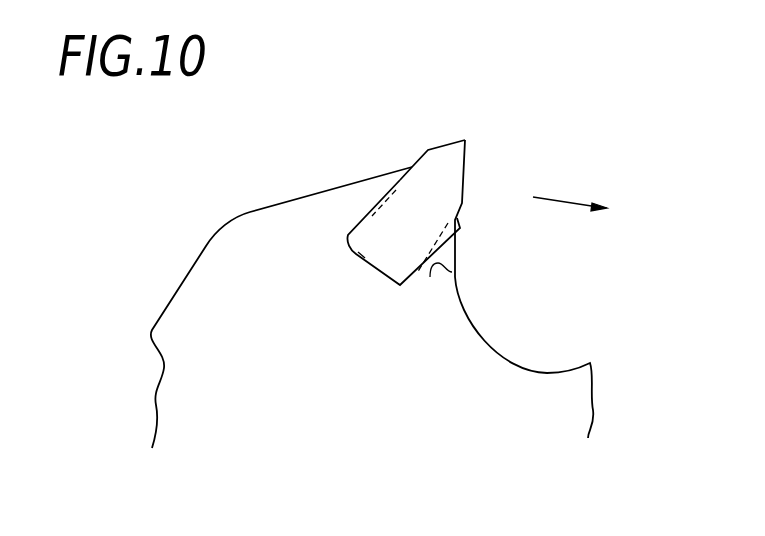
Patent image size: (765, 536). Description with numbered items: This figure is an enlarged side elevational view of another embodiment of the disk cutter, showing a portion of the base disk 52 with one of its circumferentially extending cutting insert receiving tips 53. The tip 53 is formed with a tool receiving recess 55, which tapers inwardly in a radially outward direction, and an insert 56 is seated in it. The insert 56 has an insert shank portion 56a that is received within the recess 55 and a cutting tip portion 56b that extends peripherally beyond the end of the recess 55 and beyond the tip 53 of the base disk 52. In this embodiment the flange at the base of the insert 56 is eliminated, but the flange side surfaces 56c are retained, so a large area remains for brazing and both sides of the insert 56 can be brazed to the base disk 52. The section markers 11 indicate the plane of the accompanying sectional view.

The base disk 52 is at (190, 424).
The cutting insert receiving tip 53 is at (253, 228).
The tool receiving recess 55 is at (360, 252).
The insert 56 is at (440, 140).
The insert shank portion 56a is at (422, 235).
The cutting tip portion 56b is at (465, 140).
The side surfaces 56c is at (373, 202).
The section line 11- 11 is at (545, 117).